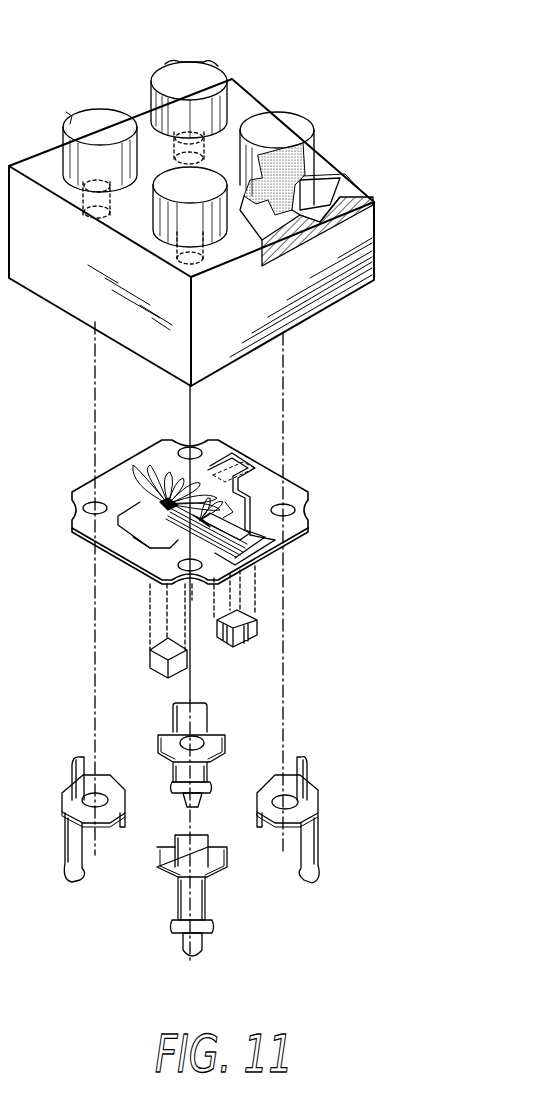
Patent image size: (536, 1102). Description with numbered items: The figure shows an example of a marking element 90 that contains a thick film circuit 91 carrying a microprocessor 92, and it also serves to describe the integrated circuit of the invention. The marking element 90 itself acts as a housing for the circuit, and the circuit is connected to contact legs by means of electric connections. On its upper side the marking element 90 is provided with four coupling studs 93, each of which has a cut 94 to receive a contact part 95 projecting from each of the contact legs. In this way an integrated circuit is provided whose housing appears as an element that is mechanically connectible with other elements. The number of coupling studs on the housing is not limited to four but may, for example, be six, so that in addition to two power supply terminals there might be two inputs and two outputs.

The marking element 90 is at (383, 232).
The thick film circuit 91 is at (297, 493).
The microprocessor 92 is at (153, 481).
The coupling stud 93 is at (212, 74).
The cut 94 is at (190, 62).
The contact part 95 is at (307, 770).